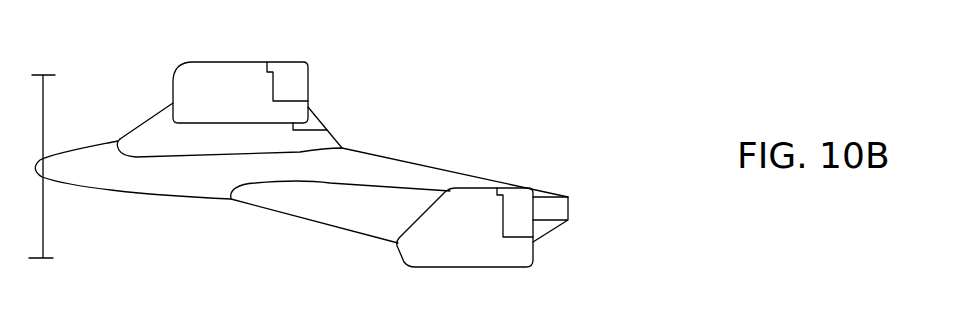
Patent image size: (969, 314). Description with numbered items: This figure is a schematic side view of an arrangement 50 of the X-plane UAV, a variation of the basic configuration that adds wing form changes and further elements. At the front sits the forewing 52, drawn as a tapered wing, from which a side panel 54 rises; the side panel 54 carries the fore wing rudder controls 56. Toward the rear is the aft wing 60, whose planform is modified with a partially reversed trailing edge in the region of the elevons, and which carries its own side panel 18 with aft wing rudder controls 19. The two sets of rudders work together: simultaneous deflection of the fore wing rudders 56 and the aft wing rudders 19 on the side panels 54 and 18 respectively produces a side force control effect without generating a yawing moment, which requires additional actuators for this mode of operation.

The arrangement 50 is at (445, 77).
The forewing 52 is at (167, 127).
The side panels 54 is at (187, 62).
The rudder controls 56 is at (290, 85).
The aft wing 60 is at (363, 218).
The side panels 18 is at (467, 188).
The rudder controls 19 is at (520, 215).